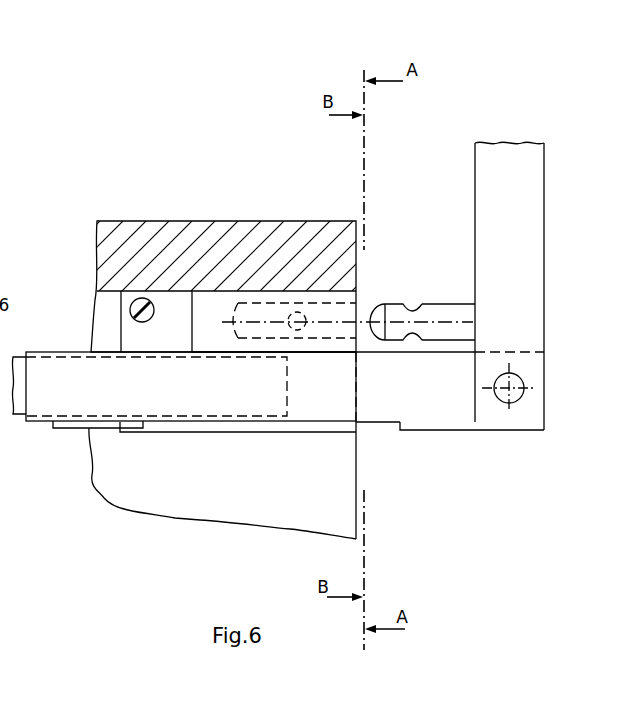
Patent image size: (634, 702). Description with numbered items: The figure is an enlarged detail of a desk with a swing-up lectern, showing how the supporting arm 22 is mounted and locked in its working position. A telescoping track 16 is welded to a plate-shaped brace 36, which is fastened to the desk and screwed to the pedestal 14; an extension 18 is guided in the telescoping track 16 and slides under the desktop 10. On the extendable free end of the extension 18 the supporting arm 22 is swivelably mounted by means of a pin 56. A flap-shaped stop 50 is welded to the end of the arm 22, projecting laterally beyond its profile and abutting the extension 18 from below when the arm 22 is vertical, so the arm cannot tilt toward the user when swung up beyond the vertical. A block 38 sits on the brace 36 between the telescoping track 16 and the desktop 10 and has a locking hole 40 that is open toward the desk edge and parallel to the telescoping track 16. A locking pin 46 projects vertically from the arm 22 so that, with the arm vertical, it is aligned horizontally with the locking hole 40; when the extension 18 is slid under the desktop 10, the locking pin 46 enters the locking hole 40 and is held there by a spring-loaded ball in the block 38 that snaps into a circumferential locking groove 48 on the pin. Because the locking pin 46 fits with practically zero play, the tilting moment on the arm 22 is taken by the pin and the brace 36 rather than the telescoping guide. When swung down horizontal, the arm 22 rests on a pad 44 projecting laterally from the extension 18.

The desktop 10 is at (190, 238).
The pedestal 14 is at (156, 503).
The telescoping track 16 is at (17, 407).
The extension 18 is at (421, 397).
The supporting arm 22 is at (515, 162).
The plate-shaped brace 36 is at (163, 312).
The block 38 is at (208, 312).
The locking hole 40 is at (263, 313).
The pad 44 is at (63, 428).
The locking pin 46 is at (445, 312).
The circumferential locking groove 48 is at (414, 303).
The flap-shaped stop 50 is at (461, 430).
The pin 56 is at (522, 381).